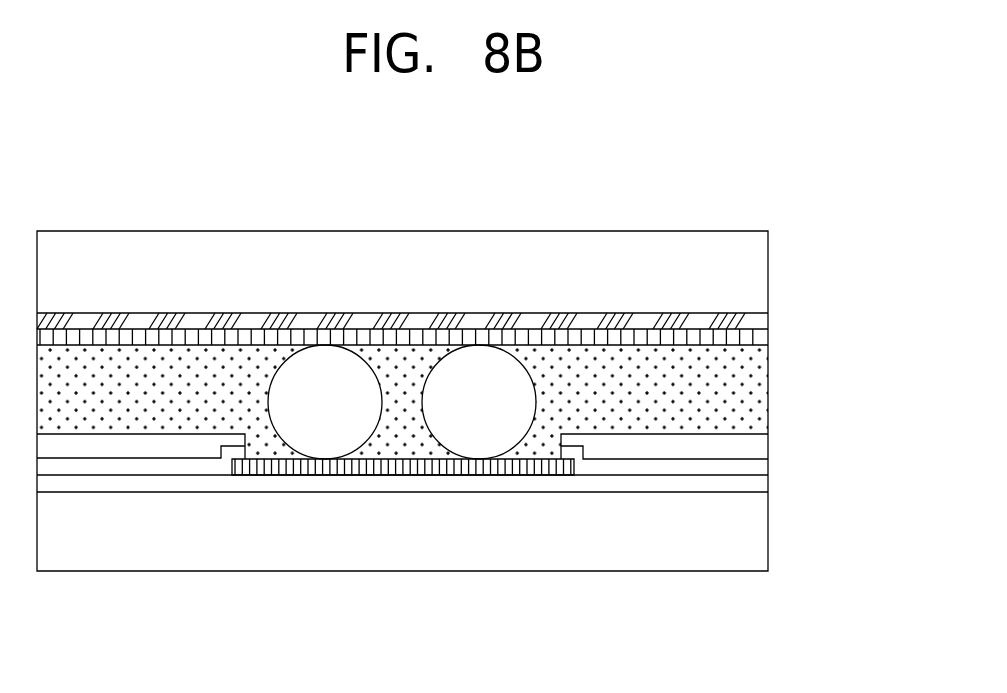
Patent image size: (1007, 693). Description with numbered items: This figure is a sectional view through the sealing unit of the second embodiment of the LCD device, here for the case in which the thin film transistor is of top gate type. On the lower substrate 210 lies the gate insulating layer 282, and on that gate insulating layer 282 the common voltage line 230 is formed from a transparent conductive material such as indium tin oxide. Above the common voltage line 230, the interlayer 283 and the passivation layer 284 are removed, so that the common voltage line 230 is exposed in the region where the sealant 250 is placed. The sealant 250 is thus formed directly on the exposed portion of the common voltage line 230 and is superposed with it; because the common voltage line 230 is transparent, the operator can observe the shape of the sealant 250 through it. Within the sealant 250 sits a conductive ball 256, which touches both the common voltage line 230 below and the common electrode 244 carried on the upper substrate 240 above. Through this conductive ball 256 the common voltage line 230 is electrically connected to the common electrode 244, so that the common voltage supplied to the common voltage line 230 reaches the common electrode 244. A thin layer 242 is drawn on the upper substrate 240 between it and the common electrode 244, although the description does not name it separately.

The upper substrate 240 is at (768, 257).
The common electrode 242 is at (768, 319).
The common electrode 244 is at (768, 343).
The sealant 250 is at (768, 392).
The conductive ball 256 is at (478, 443).
The passivation layer 284 is at (768, 442).
The interlayer 283 is at (768, 466).
The gate insulating layer 282 is at (768, 492).
The common voltage line 230 is at (380, 468).
The lower substrate 210 is at (768, 530).